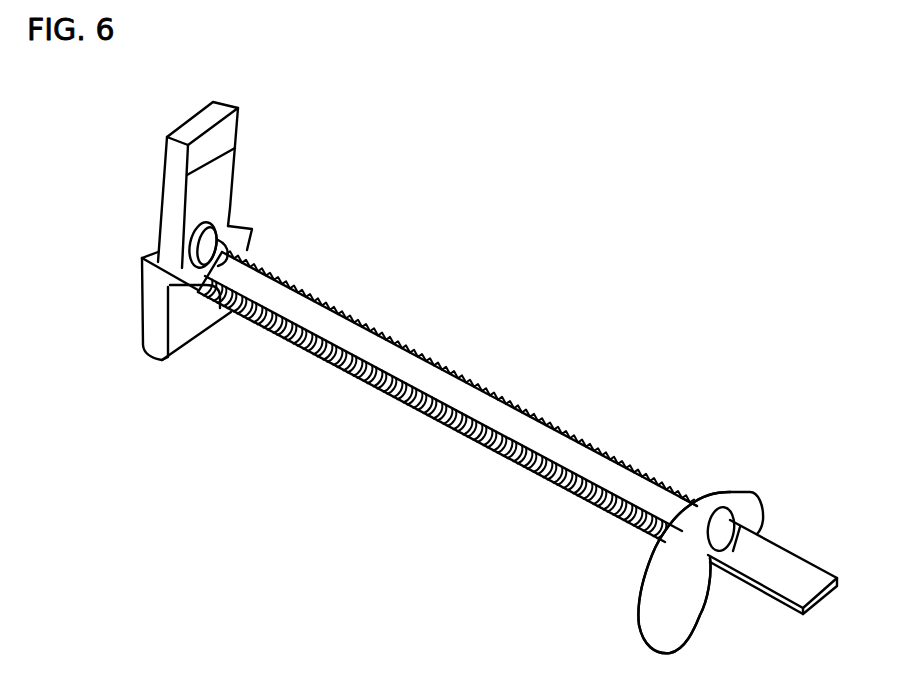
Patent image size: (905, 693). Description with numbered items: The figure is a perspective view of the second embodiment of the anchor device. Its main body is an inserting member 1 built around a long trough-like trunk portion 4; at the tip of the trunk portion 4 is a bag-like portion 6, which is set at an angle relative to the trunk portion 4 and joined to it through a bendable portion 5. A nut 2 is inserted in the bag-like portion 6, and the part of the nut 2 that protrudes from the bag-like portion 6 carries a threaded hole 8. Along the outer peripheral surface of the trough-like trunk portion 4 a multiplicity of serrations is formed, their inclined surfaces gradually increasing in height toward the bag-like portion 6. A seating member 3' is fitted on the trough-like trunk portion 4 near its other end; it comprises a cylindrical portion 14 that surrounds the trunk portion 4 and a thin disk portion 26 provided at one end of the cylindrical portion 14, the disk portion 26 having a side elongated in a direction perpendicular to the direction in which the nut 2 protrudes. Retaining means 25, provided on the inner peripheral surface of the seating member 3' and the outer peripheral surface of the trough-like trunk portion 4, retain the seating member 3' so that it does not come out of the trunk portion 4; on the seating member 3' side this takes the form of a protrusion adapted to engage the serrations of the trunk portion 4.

The inserting member 1 is at (422, 348).
The nut 2 is at (165, 207).
The seating member 3' is at (726, 495).
The trough-like trunk portion 4 is at (527, 427).
The bendable portion 5 is at (233, 247).
The bag-like portion 6 is at (177, 330).
The threaded hole 8 is at (232, 232).
The cylindrical portion 14 is at (698, 499).
The retaining means 25 is at (727, 527).
The disk portion 26 is at (665, 577).